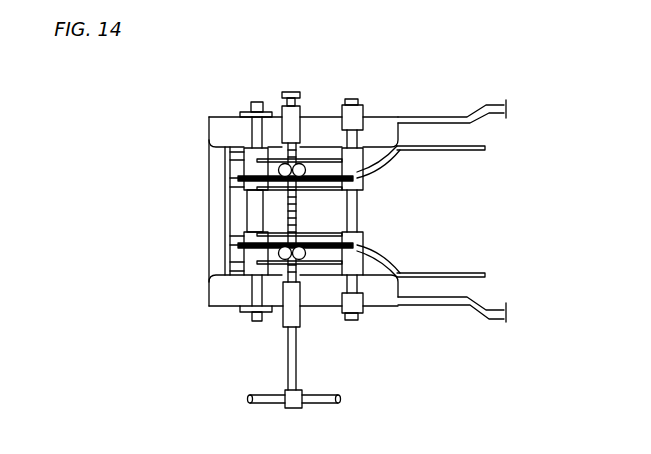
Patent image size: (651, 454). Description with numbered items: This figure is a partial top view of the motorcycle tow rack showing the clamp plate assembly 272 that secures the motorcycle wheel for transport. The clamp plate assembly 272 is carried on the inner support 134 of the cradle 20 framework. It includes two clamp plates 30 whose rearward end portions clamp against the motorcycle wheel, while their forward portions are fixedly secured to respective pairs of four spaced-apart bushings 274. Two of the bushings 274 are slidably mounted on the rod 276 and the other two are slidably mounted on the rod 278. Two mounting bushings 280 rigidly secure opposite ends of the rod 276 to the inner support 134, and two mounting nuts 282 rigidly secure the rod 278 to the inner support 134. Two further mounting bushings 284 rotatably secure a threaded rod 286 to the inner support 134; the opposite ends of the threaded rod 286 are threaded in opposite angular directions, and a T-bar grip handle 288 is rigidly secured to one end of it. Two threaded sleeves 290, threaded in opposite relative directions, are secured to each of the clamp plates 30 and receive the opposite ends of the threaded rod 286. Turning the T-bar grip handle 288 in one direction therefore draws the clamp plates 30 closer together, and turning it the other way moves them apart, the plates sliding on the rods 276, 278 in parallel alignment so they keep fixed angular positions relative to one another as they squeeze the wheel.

The cradle 20 is at (520, 108).
The clamp plates 30 is at (468, 152).
The inner support 134 is at (481, 110).
The clamp plate assembly 272 is at (200, 296).
The bushings 274 is at (245, 168).
The rod 276 is at (357, 206).
The rod 278 is at (255, 205).
The mounting bushings 280 is at (362, 110).
The mounting nuts 282 is at (256, 104).
The mounting bushings 284 is at (284, 108).
The threaded rod 286 is at (297, 372).
The T-bar grip handle 288 is at (338, 398).
The threaded sleeves 290 is at (300, 172).